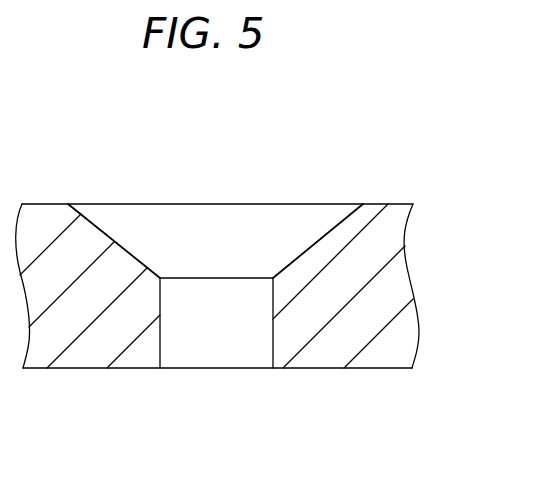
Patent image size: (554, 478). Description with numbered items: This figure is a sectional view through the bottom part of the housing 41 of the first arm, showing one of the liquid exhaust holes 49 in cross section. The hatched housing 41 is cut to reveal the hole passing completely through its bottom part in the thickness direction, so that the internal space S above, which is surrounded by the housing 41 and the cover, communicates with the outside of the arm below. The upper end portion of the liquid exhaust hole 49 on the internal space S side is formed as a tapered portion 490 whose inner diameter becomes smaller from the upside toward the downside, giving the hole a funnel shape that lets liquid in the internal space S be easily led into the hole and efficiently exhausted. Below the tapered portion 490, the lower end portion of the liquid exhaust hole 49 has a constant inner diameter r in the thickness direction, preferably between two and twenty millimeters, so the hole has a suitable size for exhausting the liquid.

The housing 41 is at (390, 287).
The liquid exhaust hole 49 is at (267, 235).
The tapered portion 490 is at (113, 220).
The inner diameter r is at (272, 323).
The internal space S is at (235, 166).